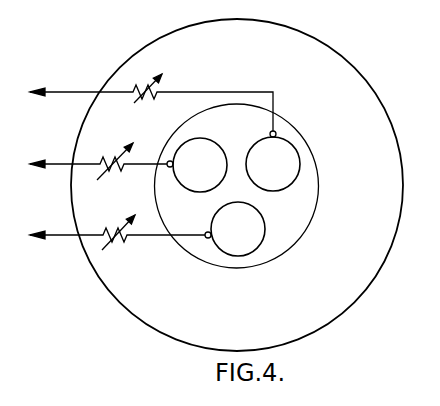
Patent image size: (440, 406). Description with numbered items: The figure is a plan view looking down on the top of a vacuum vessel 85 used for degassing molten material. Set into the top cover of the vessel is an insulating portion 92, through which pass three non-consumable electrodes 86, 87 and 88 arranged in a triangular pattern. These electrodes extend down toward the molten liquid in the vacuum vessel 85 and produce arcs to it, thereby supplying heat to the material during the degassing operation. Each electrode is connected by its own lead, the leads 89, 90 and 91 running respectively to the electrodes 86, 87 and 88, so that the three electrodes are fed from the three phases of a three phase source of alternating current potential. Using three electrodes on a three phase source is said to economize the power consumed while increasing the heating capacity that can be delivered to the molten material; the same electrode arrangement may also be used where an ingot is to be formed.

The vacuum vessel 85 is at (389, 64).
The non-consumable electrode 86 is at (279, 191).
The non-consumable electrode 87 is at (265, 230).
The non-consumable electrode 88 is at (197, 192).
The lead 89 is at (67, 91).
The lead 90 is at (54, 162).
The lead 91 is at (60, 232).
The insulating portion 92 is at (314, 221).